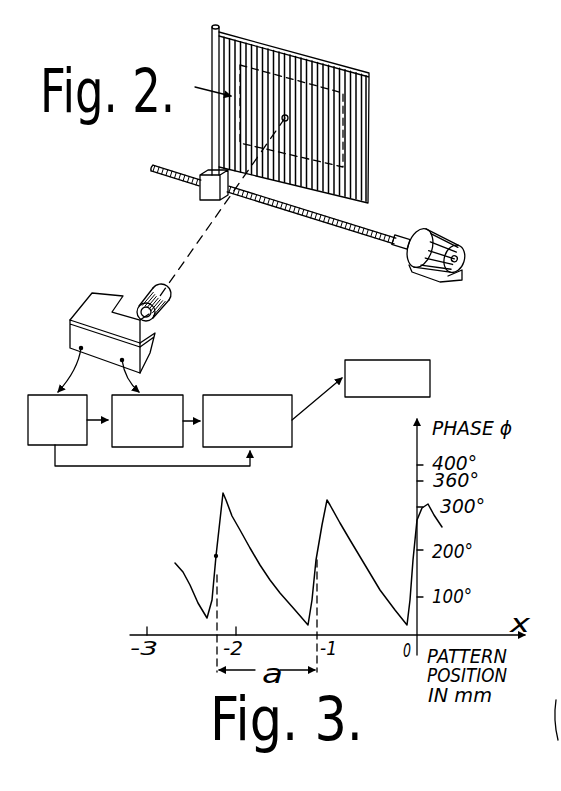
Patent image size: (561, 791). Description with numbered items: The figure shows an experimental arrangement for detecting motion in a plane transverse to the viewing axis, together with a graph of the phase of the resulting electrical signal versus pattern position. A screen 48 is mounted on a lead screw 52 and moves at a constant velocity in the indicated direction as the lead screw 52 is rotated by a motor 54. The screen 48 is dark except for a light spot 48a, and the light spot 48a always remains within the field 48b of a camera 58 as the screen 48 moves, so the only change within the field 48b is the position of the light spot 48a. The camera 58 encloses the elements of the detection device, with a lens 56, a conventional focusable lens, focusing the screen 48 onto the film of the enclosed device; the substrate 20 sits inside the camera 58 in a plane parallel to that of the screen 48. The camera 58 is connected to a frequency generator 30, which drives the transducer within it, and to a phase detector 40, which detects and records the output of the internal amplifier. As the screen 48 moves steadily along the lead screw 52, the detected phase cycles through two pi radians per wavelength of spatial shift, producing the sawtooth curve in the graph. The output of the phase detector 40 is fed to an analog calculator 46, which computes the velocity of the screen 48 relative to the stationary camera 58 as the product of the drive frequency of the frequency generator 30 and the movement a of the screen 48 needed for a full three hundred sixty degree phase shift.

In FIG. 2, the substrate 20 is at (444, 5).
In FIG. 3, the substrate 20 is at (558, 750).
In FIG. 2, the screen 48 is at (290, 63).
In FIG. 2, the light spot 48a is at (287, 116).
In FIG. 2, the field 48b is at (346, 152).
In FIG. 2, the lead screw 52 is at (372, 224).
In FIG. 2, the motor 54 is at (430, 232).
In FIG. 2, the lens 56 is at (164, 309).
In FIG. 2, the camera 58 is at (145, 330).
In FIG. 2, the frequency generator 30 is at (43, 445).
In FIG. 2, the phase detector 40 is at (172, 395).
In FIG. 2, the analog calculator 46 is at (237, 394).